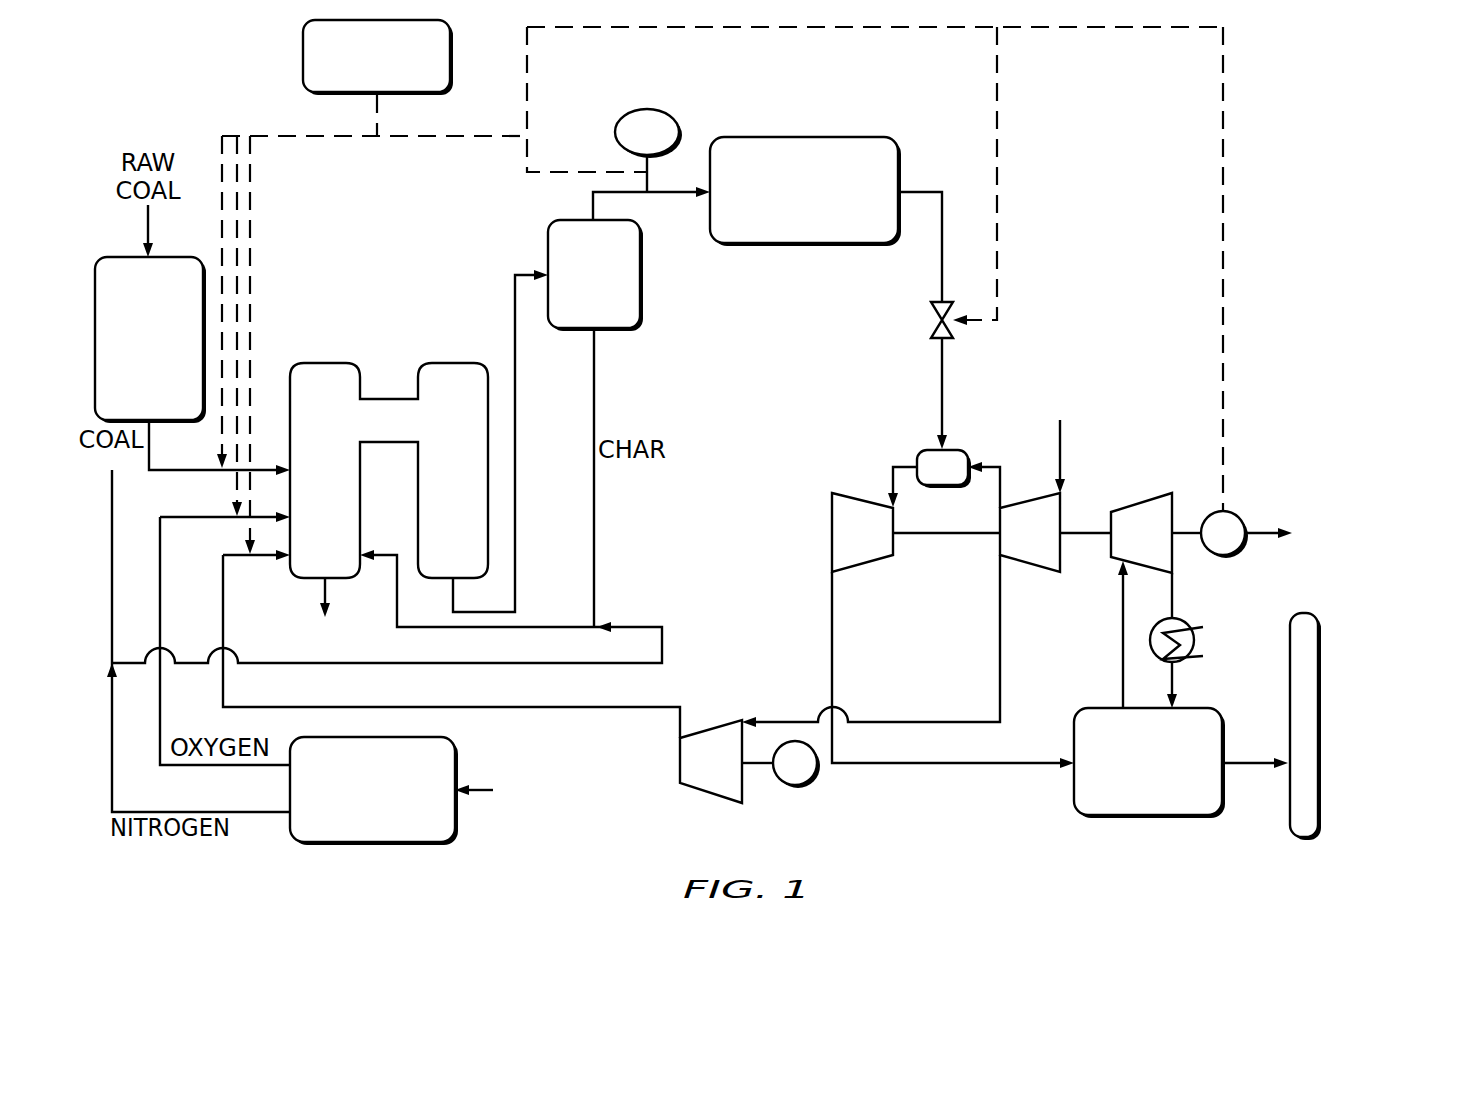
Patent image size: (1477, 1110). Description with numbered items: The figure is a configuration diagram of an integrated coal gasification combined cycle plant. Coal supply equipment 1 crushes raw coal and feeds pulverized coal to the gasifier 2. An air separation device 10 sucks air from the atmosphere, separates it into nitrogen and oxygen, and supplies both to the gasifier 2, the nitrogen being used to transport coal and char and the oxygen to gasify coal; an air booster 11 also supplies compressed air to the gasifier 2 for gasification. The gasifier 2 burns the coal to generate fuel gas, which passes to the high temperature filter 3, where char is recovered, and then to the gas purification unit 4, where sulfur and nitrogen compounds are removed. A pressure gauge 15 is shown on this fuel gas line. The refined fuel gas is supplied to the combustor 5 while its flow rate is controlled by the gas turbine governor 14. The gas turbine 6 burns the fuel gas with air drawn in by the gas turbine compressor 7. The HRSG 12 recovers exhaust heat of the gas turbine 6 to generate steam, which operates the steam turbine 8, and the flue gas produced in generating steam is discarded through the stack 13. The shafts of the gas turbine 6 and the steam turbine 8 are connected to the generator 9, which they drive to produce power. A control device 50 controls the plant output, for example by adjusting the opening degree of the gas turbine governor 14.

The coal supply equipment 1 is at (124, 257).
The gasifier 2 is at (327, 363).
The high temperature filter 3 is at (548, 252).
The gas purification unit 4 is at (865, 137).
The combustor 5 is at (953, 450).
The gas turbine 6 is at (882, 500).
The gas turbine compressor 7 is at (1030, 497).
The steam turbine 8 is at (1115, 513).
The generator 9 is at (1237, 513).
The air separation device 10 is at (457, 757).
The air booster 11 is at (715, 728).
The HRSG 12 is at (1192, 708).
The stack 13 is at (1320, 728).
The gas turbine governor 14 is at (940, 302).
The pressure gauge 15 is at (665, 112).
The control device 50 is at (303, 58).